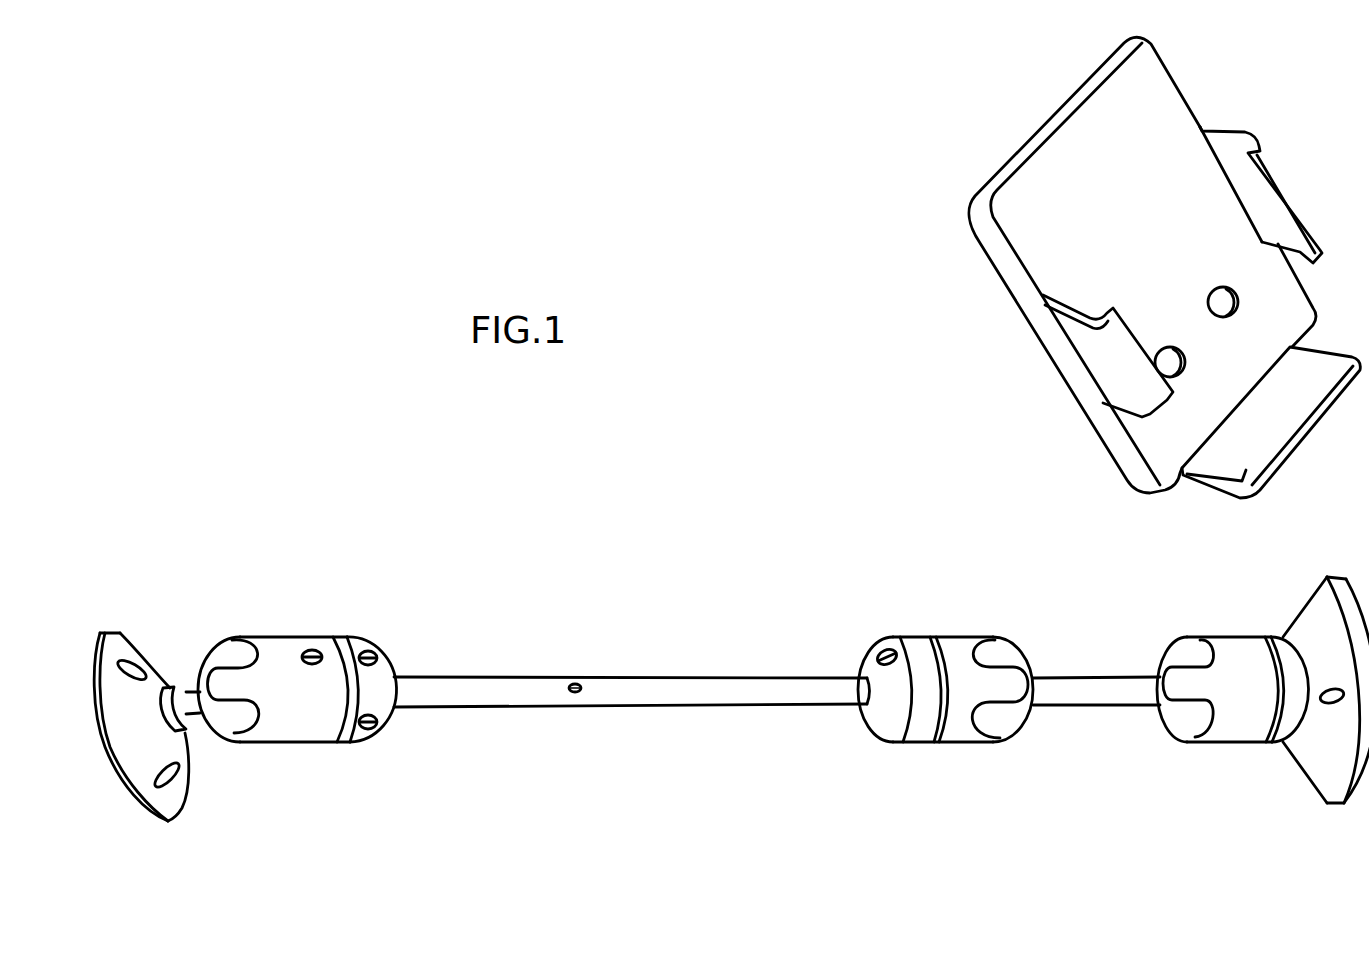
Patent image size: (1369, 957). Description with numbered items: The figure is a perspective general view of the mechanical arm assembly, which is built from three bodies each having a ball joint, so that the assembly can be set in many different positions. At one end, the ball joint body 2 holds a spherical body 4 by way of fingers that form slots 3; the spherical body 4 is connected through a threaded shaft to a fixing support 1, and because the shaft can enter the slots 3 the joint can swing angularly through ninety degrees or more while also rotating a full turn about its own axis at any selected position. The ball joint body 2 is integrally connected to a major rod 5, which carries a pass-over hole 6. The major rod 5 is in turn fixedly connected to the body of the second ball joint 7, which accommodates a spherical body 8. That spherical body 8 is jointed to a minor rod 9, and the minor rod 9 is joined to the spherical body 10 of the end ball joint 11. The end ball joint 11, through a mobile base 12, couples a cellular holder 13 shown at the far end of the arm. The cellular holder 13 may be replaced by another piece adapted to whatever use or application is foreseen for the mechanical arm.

The fixing support 1 is at (138, 742).
The ball joint body 2 is at (280, 670).
The slots 3 is at (255, 728).
The spherical body 4 is at (235, 652).
The major rod 5 is at (675, 688).
The pass-over hole 6 is at (575, 684).
The ball joint body 7 is at (962, 643).
The spherical body 8 is at (1000, 717).
The minor rod 9 is at (1074, 690).
The spherical body 10 is at (1188, 652).
The end ball joint 11 is at (1232, 710).
The mobile base 12 is at (1337, 732).
The cellular holder 13 is at (1107, 227).